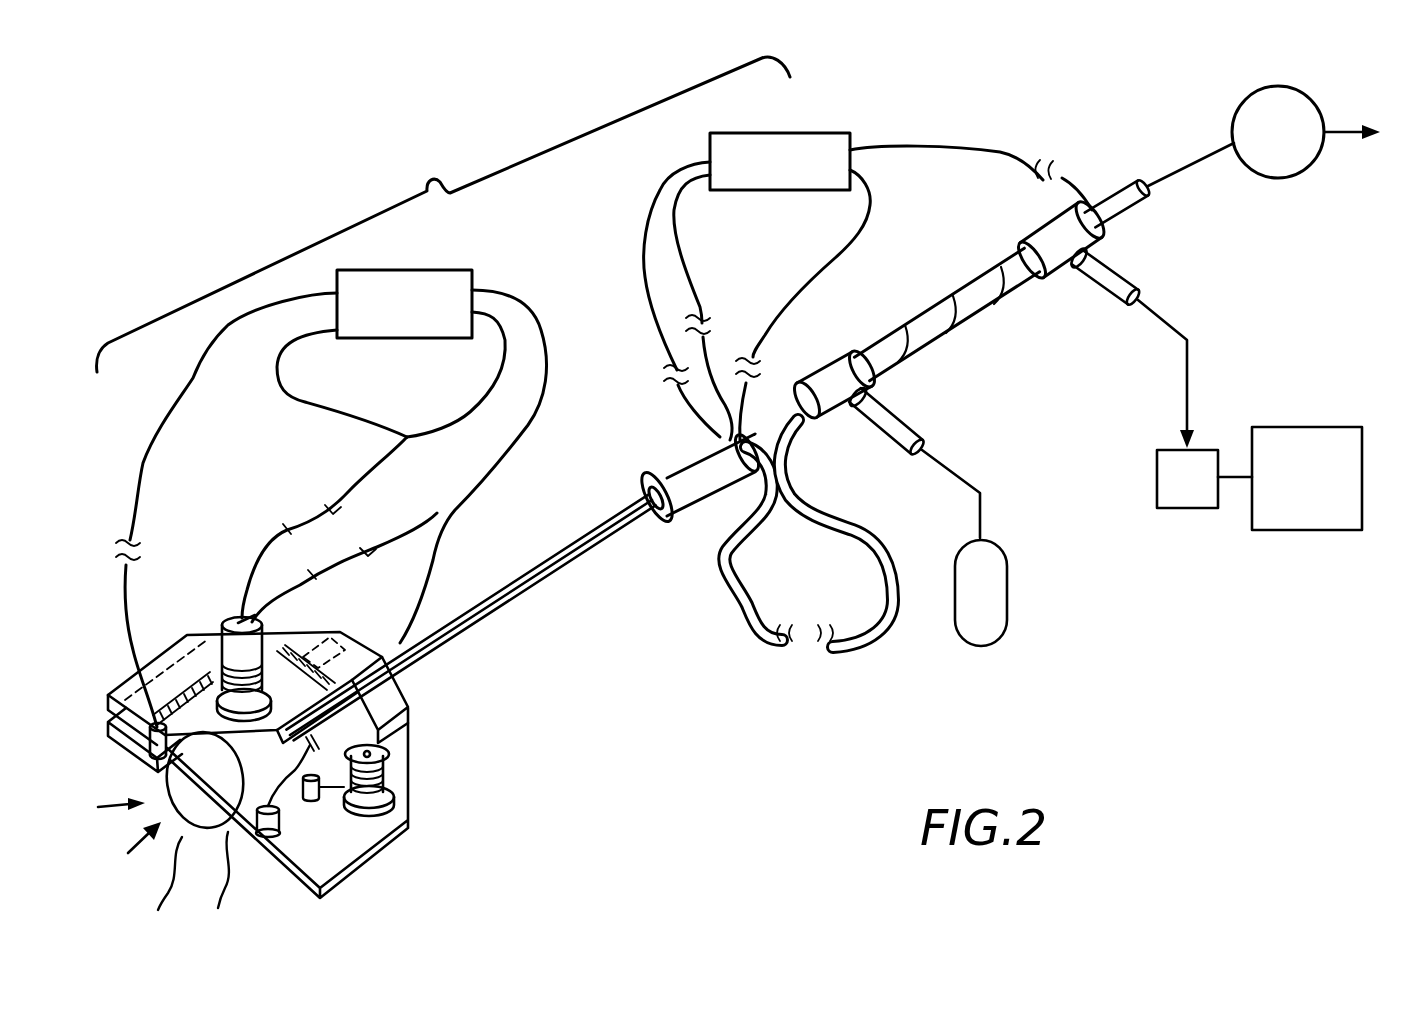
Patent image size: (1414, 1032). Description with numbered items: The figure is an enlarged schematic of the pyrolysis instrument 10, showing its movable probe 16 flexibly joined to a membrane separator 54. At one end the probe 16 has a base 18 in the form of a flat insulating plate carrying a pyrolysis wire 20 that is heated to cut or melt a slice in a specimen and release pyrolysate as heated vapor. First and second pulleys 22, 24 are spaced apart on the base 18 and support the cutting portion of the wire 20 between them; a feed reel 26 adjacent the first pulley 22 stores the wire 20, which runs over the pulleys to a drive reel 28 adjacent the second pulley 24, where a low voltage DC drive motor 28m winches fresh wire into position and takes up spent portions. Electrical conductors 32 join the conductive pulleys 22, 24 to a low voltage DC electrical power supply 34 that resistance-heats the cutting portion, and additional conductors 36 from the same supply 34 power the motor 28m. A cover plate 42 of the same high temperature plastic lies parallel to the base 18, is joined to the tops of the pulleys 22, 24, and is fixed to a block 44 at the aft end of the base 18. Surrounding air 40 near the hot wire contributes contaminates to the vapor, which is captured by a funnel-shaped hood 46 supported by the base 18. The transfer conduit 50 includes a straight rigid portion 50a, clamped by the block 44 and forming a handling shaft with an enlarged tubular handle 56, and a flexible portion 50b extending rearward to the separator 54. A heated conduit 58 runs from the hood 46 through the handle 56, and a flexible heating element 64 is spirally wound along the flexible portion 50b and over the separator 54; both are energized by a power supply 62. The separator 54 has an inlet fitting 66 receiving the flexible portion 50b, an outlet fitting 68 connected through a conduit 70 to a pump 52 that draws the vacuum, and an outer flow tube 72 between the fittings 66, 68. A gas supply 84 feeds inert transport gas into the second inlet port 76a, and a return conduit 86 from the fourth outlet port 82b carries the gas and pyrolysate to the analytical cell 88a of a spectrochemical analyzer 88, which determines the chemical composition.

The pyrolysis instrument 10 is at (430, 182).
The probe 16 is at (568, 520).
The base 18 is at (383, 845).
The pyrolysis wire 20 is at (192, 868).
The first pulley 22 is at (283, 830).
The second pulley 24 is at (135, 753).
The feed reel 26 is at (396, 794).
The drive reel 28 is at (218, 672).
The drive motor 28m is at (238, 622).
The electrical conductors 32 is at (280, 384).
The electrical power supply 34 is at (390, 320).
The additional conductors 36 is at (513, 455).
The surrounding air 40 is at (1343, 127).
The cover plate 42 is at (328, 648).
The block 44 is at (412, 706).
The hood 46 is at (186, 886).
The transfer conduit 50 is at (732, 622).
The rigid portion 50a is at (513, 584).
The flexible portion 50b is at (848, 652).
The pump 52 is at (1241, 103).
The membrane separator 54 is at (938, 290).
The handle 56 is at (666, 452).
The conduit 58 is at (533, 592).
The power supply 62 is at (769, 177).
The flexible heating element 64 is at (880, 529).
The inlet fitting 66 is at (844, 362).
The outlet fitting 68 is at (1043, 220).
The conduit 70 is at (1114, 192).
The outer flow tube 72 is at (921, 352).
The second inlet port 76a is at (853, 420).
The fourth outlet port 82b is at (1087, 280).
The gas supply 84 is at (968, 607).
The return conduit 86 is at (1130, 273).
The spectrochemical analyzer 88 is at (1293, 494).
The analytical cell 88a is at (1168, 494).